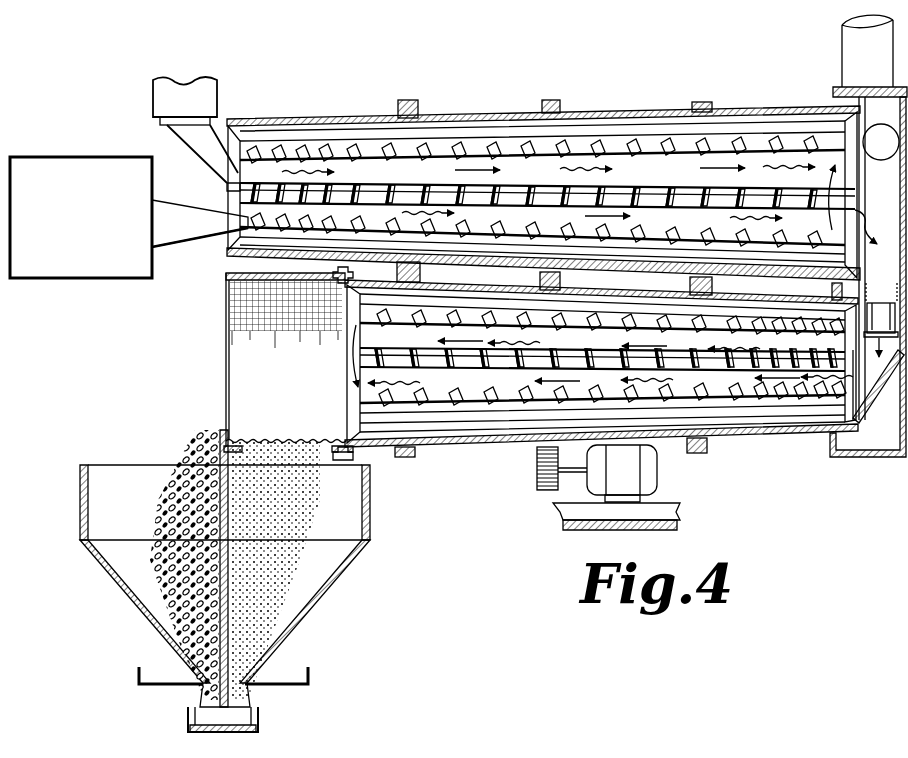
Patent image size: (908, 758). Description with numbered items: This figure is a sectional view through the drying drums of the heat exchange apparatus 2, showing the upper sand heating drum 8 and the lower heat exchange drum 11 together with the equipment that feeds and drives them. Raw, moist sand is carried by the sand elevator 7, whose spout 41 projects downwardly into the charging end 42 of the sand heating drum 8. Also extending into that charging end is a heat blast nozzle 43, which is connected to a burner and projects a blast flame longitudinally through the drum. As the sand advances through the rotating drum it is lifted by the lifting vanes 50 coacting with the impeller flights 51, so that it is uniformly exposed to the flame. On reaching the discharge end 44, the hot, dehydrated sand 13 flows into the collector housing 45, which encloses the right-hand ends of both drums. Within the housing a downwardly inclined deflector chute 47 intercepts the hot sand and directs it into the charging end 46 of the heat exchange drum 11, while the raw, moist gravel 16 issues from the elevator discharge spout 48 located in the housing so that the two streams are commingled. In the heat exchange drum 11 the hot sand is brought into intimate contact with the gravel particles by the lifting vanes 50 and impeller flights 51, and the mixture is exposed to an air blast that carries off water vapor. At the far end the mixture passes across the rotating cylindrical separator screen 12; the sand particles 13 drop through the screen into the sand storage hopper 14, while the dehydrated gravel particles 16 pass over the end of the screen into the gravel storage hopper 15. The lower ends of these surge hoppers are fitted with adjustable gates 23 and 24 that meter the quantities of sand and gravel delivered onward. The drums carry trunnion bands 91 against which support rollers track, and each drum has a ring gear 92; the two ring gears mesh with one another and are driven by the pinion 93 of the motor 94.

The heat exchange apparatus 2 is at (738, 101).
The sand elevator 7 is at (190, 98).
The sand heating drum 8 is at (589, 112).
The heat exchange drum 11 is at (790, 426).
The cylindrical separator screen 12 is at (240, 338).
The sand particles 13 is at (300, 582).
The sand storage hopper 14 is at (370, 505).
The gravel storage hopper 15 is at (80, 493).
The gravel particles 16 is at (150, 575).
The adjustable gate 23 is at (310, 672).
The adjustable gate 24 is at (137, 672).
The spout 41 is at (203, 138).
The charging end 42 is at (227, 190).
The heat blast nozzle 43 is at (175, 240).
The discharge end 44 is at (864, 100).
The collector housing 45 is at (870, 87).
The charging end 46 is at (872, 247).
The elevator discharge spout 48 is at (880, 316).
The deflector chute 47 is at (850, 414).
The lifting vanes 50 is at (370, 150).
The impeller flights 51 is at (507, 163).
The trunnion bands 91 is at (418, 104).
The ring gear 92 is at (558, 100).
The pinion 93 is at (540, 470).
The motor 94 is at (655, 478).